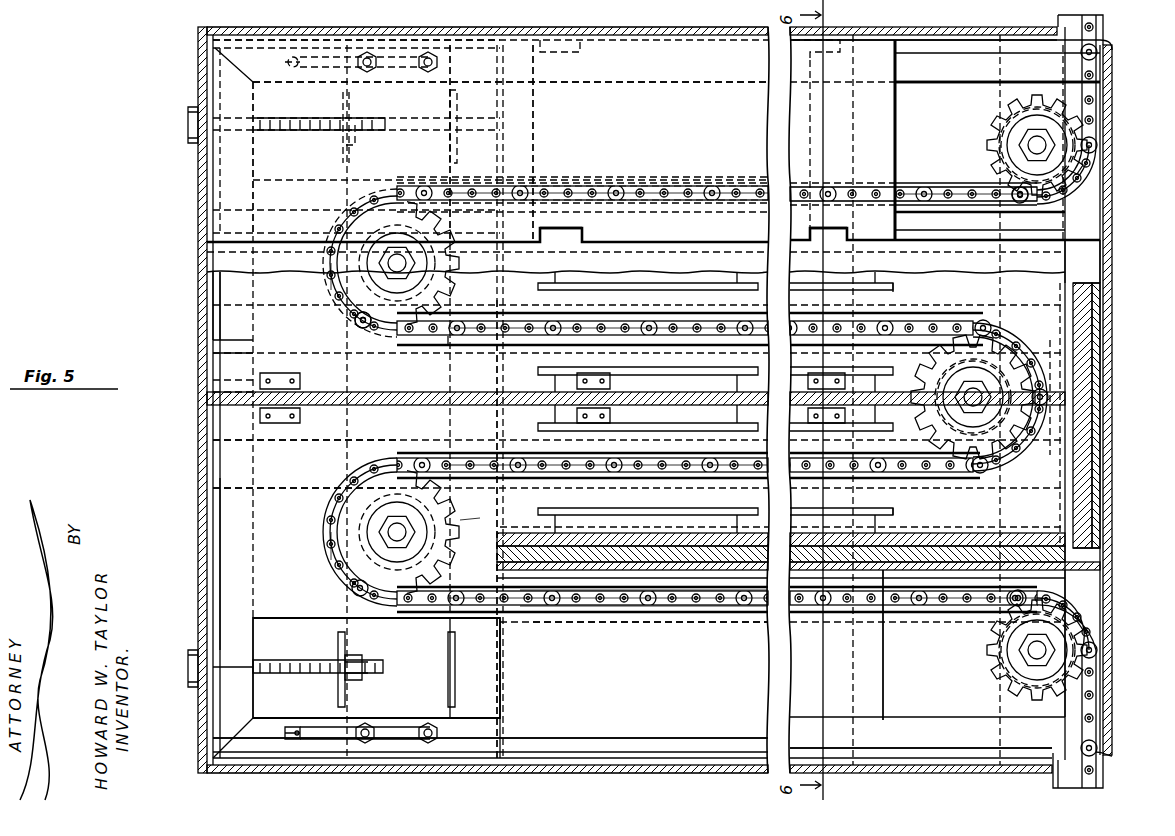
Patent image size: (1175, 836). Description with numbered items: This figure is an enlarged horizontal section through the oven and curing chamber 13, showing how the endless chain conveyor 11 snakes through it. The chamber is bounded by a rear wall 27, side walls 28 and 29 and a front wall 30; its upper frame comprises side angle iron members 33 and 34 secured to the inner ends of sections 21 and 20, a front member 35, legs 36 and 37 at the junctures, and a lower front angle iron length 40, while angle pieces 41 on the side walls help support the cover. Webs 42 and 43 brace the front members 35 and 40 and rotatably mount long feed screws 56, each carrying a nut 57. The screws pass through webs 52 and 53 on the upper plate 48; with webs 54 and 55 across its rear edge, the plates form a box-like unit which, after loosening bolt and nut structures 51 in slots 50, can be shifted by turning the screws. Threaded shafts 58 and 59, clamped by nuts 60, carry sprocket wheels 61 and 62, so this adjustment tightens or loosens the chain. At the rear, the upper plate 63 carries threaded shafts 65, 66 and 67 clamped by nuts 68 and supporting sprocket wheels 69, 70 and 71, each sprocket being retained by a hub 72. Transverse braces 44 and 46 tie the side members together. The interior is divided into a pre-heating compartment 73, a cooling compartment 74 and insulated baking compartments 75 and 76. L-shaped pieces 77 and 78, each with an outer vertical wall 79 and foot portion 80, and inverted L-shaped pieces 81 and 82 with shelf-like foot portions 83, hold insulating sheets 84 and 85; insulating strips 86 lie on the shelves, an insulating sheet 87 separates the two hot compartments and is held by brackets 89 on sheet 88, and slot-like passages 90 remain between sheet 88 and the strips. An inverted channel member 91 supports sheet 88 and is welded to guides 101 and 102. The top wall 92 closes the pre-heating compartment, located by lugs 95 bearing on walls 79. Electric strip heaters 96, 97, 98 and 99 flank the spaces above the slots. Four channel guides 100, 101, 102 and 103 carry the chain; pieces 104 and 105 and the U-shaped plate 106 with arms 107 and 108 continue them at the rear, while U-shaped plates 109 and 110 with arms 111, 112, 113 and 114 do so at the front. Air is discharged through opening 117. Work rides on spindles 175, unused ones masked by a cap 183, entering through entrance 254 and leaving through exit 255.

The endless chain conveyor 11 is at (326, 318).
The oven and curing chamber 13 is at (193, 217).
The section 20 is at (1105, 772).
The section 21 is at (1105, 26).
The rear wall 27 is at (1112, 340).
The side wall 28 is at (712, 28).
The side wall 29 is at (665, 775).
The front wall 30 is at (270, 322).
The side angle iron member 33 is at (650, 70).
The side angle iron member 34 is at (645, 718).
The front member 35 is at (215, 553).
The legs 36 is at (1035, 40).
The legs 37 is at (207, 58).
The angle iron length 40 is at (240, 600).
The angle pieces 41 is at (228, 232).
The web 42 is at (190, 150).
The web 43 is at (240, 622).
The upper angle iron member 44 is at (535, 715).
The member 46 is at (885, 680).
The upper plate 48 is at (376, 668).
The longitudinally extending slots 50 is at (300, 70).
The bolt and nut structures 51 is at (420, 72).
The web 52 is at (340, 145).
The web 53 is at (338, 645).
The web 54 is at (452, 142).
The web 55 is at (456, 680).
The feed screws 56 is at (295, 132).
The nut 57 is at (355, 145).
The threaded shaft 58 is at (699, 423).
The threaded shaft 59 is at (407, 532).
The nuts 60 is at (415, 275).
The sprocket wheel 61 is at (455, 290).
The sprocket wheel 62 is at (455, 525).
The upper horizontal plate 63 is at (1100, 382).
The threaded shaft 65 is at (1049, 108).
The threaded shaft 66 is at (980, 399).
The threaded shaft 67 is at (1049, 689).
The nuts 68 is at (1010, 132).
The sprocket wheel 69 is at (1005, 155).
The sprocket wheel 70 is at (928, 380).
The sprocket wheel 71 is at (1000, 688).
The hub 72 is at (375, 280).
The pre-heating compartment 73 is at (600, 100).
The cooling compartment 74 is at (720, 690).
The baking, drying and curing compartment 75 is at (640, 300).
The baking, drying and curing compartment 76 is at (628, 587).
The L-shaped metal piece 77 is at (1092, 224).
The L-shaped metal piece 78 is at (1090, 578).
The outer vertical wall 79 is at (642, 188).
The foot portion 80 is at (913, 194).
The inverted L-shaped piece 81 is at (724, 240).
The inverted L-shaped piece 82 is at (720, 587).
The foot portion 83 is at (1020, 320).
The sheets of insulating material 84 is at (990, 240).
The sheets of insulating material 85 is at (1095, 262).
The insulating strips 86 is at (1068, 297).
The insulating sheet 87 is at (398, 392).
The insulating sheet 88 is at (342, 462).
The brackets 89 is at (292, 395).
The slot-like passages 90 is at (500, 352).
The inverted channel member 91 is at (205, 382).
The top wall 92 is at (895, 120).
The lugs 95 is at (555, 225).
The electric strip heater 96 is at (588, 290).
The electric strip heater 97 is at (630, 370).
The electric strip heater 98 is at (634, 425).
The electric strip heater 99 is at (628, 512).
The channel shaped guide 100 is at (590, 188).
The channel shaped guide 101 is at (500, 345).
The channel shaped guide 102 is at (460, 460).
The channel shaped guide 103 is at (565, 616).
The short piece 104 is at (905, 186).
The piece 105 is at (925, 606).
The U-shaped plate 106 is at (1055, 438).
The arm 107 is at (925, 320).
The arm 108 is at (940, 480).
The U-shaped plate 109 is at (212, 336).
The U-shaped plate 110 is at (270, 532).
The arm 111 is at (463, 185).
The arm 112 is at (442, 345).
The arm 113 is at (470, 518).
The arm 114 is at (462, 590).
The opening 117 is at (908, 95).
The work carrying spindles 175 is at (625, 180).
The sheet metal cap 183 is at (530, 186).
The entrance 254 is at (1112, 42).
The exit 255 is at (1112, 755).